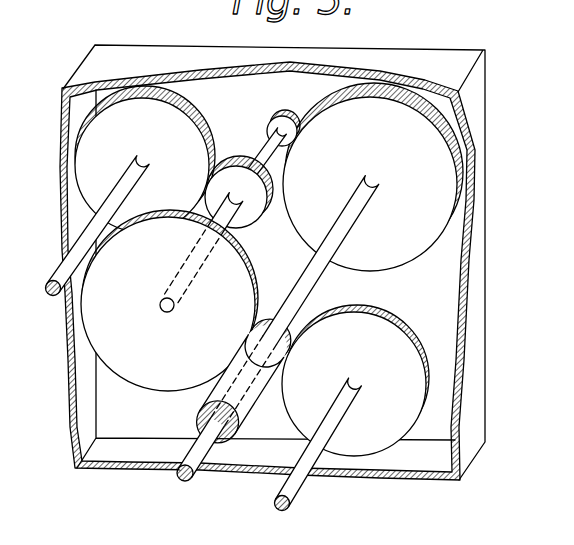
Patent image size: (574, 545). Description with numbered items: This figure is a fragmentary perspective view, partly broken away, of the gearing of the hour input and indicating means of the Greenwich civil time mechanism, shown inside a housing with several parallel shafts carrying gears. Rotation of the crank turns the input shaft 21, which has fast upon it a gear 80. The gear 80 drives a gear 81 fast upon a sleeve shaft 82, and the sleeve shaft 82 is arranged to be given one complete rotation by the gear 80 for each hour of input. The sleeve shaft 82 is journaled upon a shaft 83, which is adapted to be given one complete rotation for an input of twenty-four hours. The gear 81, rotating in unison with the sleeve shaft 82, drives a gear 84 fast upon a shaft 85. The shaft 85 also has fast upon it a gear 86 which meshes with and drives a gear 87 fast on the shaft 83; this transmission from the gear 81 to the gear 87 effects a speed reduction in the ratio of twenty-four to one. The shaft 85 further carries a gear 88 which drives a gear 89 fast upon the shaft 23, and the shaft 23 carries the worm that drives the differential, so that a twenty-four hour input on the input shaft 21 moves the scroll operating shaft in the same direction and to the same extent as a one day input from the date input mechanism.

The input shaft 21 is at (300, 486).
The shaft 23 is at (77, 247).
The gear 80 is at (414, 333).
The gear 81 is at (268, 318).
The sleeve shaft 82 is at (246, 404).
The shaft 83 is at (357, 210).
The gear 84 is at (151, 381).
The shaft 85 is at (231, 213).
The gear 86 is at (287, 112).
The gear 87 is at (407, 255).
The gear 88 is at (239, 152).
The gear 89 is at (183, 101).